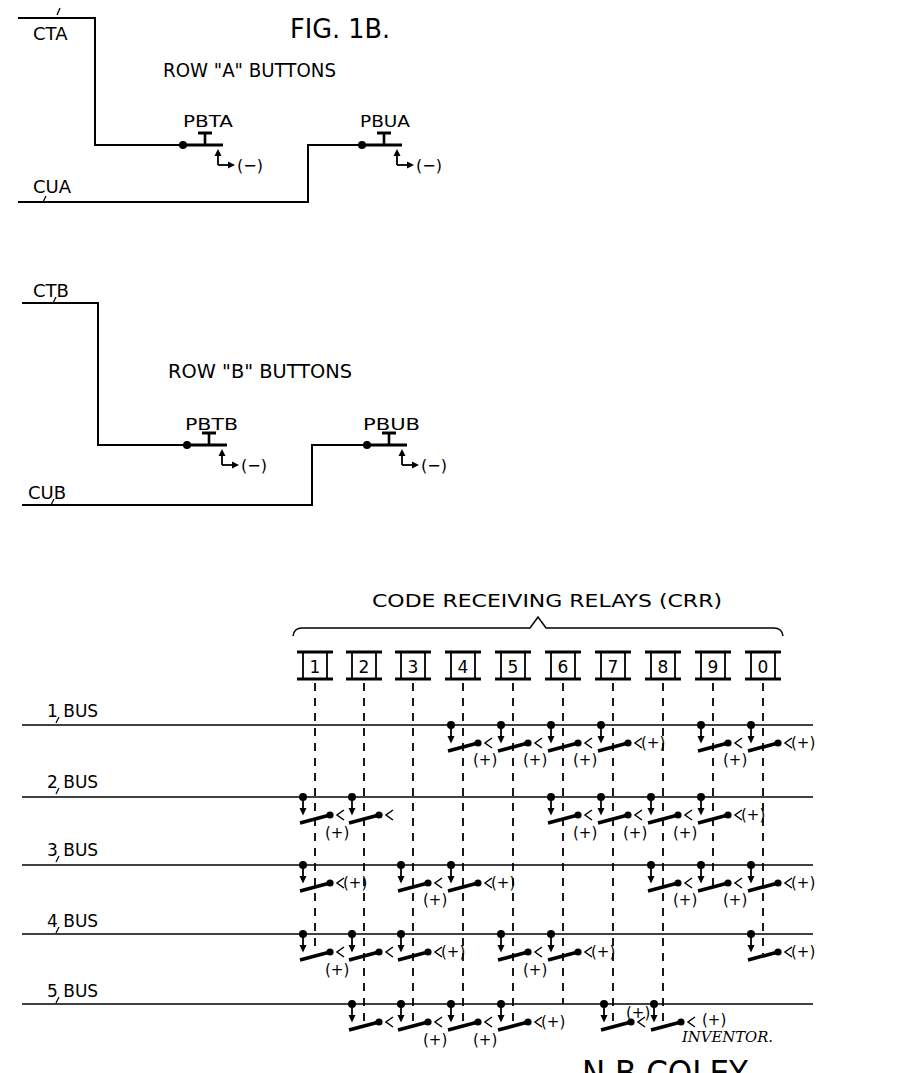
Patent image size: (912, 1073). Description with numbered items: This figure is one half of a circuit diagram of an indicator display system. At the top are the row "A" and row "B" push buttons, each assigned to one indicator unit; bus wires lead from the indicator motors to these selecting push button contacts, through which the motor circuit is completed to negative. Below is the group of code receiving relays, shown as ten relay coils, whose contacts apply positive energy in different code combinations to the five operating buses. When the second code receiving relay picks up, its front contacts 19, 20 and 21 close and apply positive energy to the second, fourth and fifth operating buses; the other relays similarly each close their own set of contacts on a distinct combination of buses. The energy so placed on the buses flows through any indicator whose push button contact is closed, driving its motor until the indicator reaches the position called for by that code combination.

The front contact 19 is at (367, 821).
The front contact 20 is at (370, 957).
The front contact 21 is at (362, 1036).